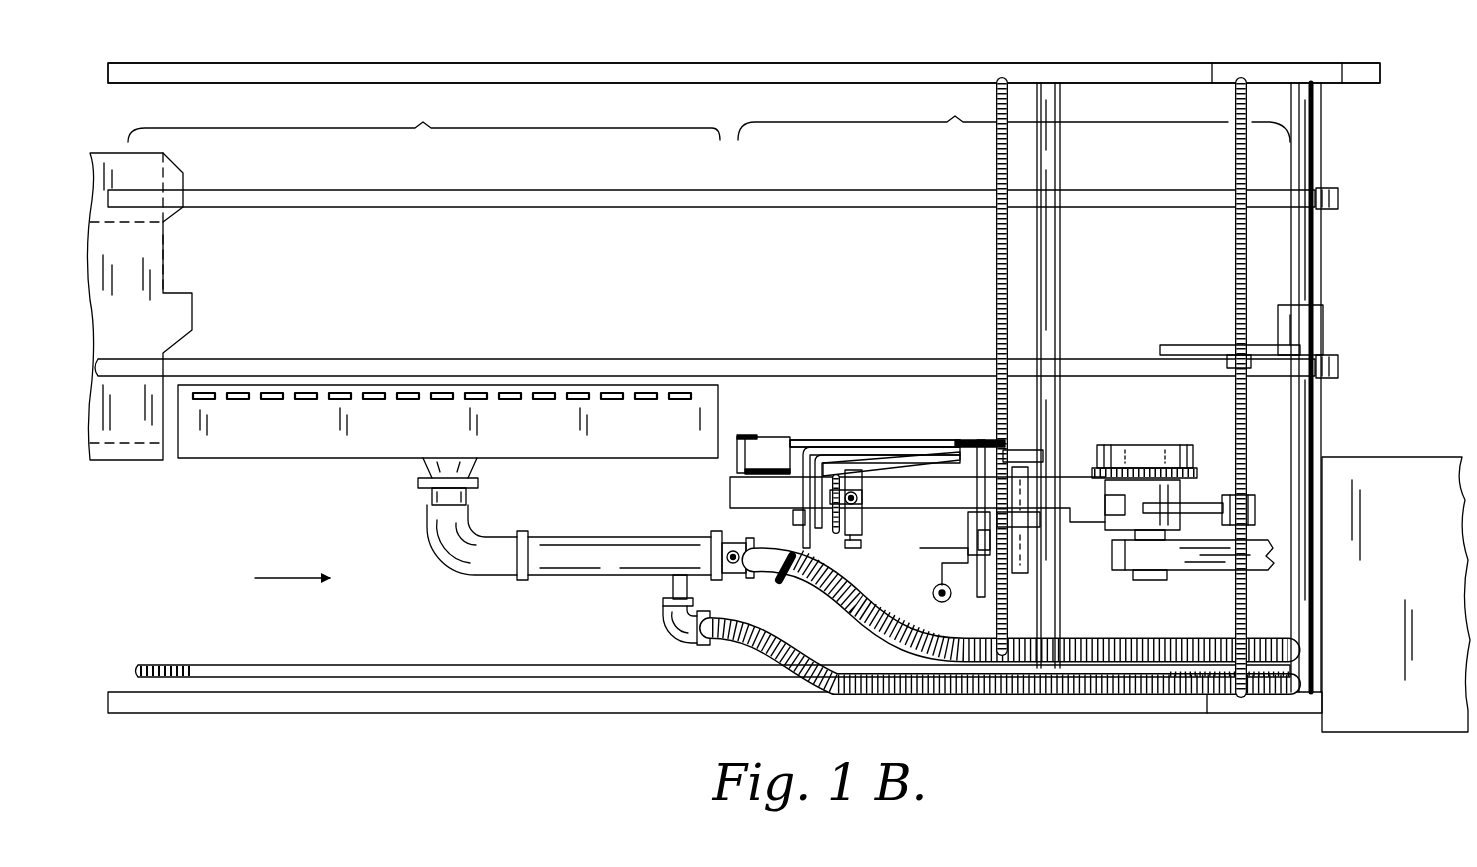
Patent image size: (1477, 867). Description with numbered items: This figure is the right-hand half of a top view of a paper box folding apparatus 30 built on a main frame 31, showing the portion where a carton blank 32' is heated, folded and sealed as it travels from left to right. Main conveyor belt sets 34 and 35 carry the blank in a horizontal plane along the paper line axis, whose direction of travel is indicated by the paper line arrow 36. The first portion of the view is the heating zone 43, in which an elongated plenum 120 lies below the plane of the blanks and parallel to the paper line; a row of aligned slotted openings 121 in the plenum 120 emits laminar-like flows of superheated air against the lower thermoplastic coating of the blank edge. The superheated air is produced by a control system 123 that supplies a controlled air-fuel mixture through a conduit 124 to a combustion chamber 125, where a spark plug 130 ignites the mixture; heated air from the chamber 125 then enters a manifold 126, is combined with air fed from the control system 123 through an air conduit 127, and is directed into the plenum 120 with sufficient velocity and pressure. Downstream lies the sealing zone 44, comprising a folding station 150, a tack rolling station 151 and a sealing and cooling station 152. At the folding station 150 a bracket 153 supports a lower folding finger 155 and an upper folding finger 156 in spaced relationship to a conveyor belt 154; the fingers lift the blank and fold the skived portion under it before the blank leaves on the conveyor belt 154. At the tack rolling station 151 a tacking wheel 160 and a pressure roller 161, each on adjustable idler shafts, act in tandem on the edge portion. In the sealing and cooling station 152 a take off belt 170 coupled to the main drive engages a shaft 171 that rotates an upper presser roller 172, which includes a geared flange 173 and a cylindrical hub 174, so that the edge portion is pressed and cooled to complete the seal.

The paper box folding apparatus 30 is at (872, 48).
The main frame 31 is at (715, 62).
The heating zone 43 is at (424, 118).
The sealing zone 44 is at (1014, 117).
The main conveyor belt set 34 is at (482, 189).
The main conveyor belt set 35 is at (540, 358).
The carton blank 32' is at (171, 306).
The elongated plenum 120 is at (217, 459).
The slotted openings 121 is at (240, 402).
The combustion chamber 125 is at (731, 542).
The manifold 126 is at (592, 578).
The air conduit 127 is at (662, 623).
The spark plug 130 is at (735, 578).
The paper line arrow 36 is at (300, 588).
The folding station 150 is at (820, 425).
The tack rolling station 151 is at (965, 435).
The sealing and cooling station 152 is at (1115, 442).
The bracket 153 is at (886, 509).
The conveyor belt 154 is at (903, 440).
The lower folding finger 155 is at (912, 478).
The upper folding finger 156 is at (866, 452).
The tacking wheel 160 is at (981, 438).
The pressure roller 161 is at (1030, 460).
The take off belt 170 is at (1262, 560).
The shaft 171 is at (1153, 581).
The upper presser roller 172 is at (1170, 467).
The geared flange 173 is at (1196, 478).
The cylindrical hub 174 is at (1155, 444).
The control system 123 is at (1386, 509).
The conduit 124 is at (1113, 664).